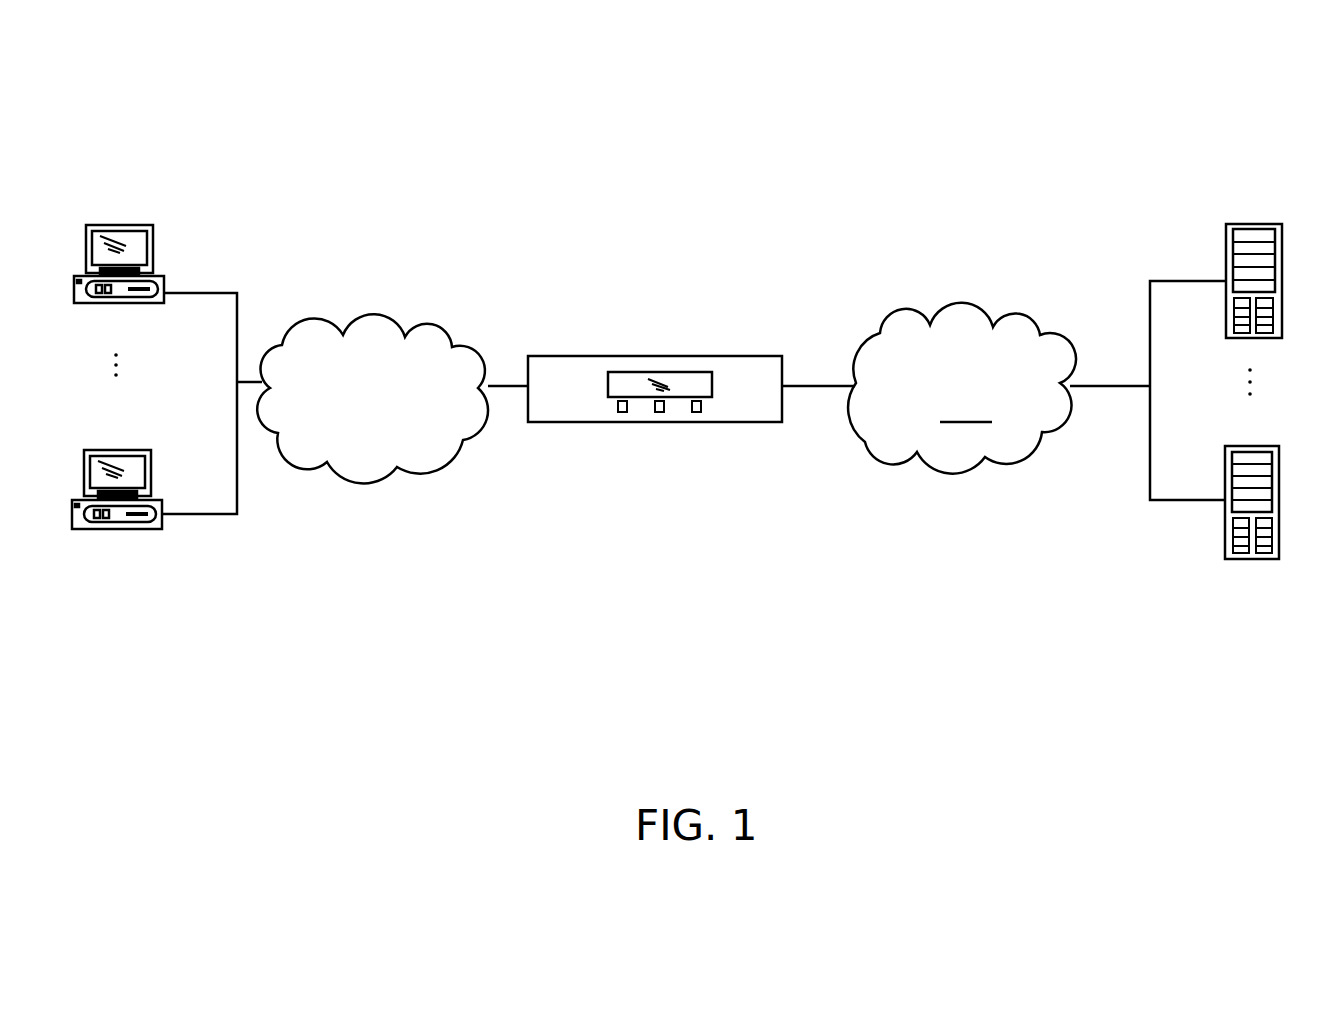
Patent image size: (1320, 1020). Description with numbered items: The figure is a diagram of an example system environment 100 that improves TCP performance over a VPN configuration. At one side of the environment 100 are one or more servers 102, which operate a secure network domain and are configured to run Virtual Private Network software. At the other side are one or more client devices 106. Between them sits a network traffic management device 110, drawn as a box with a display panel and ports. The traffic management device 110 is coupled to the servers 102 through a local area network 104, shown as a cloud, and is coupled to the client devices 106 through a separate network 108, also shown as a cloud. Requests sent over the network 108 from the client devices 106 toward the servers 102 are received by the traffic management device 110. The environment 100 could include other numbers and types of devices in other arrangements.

The system environment 100 is at (1210, 97).
The servers 102 is at (1226, 226).
The local area network (LAN) 104 is at (237, 340).
The client devices 106 is at (165, 291).
The network 108 is at (347, 424).
The traffic management device 110 is at (658, 356).